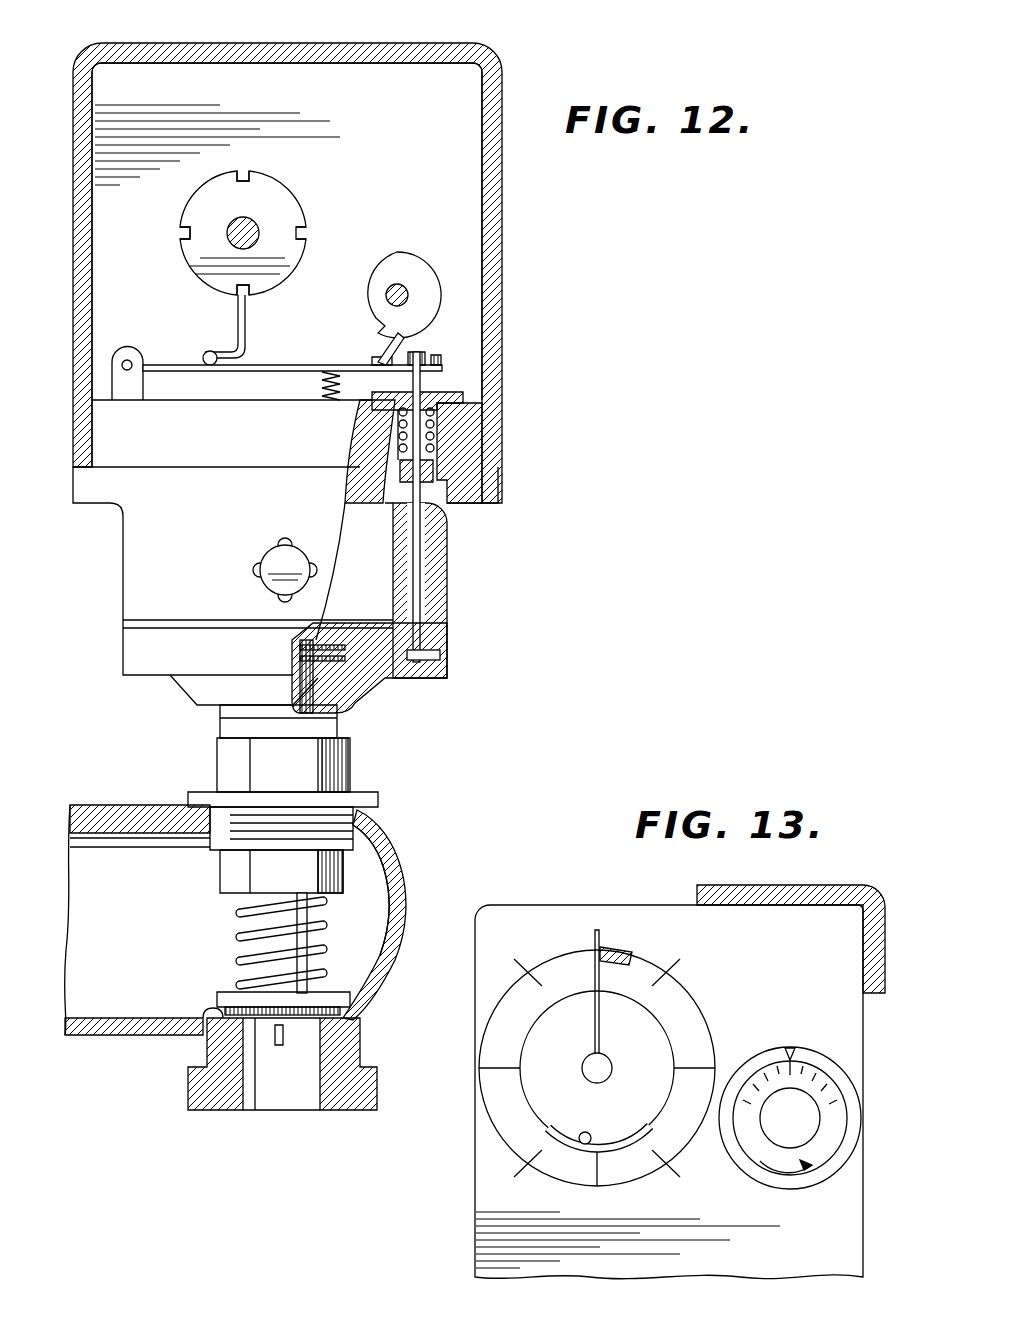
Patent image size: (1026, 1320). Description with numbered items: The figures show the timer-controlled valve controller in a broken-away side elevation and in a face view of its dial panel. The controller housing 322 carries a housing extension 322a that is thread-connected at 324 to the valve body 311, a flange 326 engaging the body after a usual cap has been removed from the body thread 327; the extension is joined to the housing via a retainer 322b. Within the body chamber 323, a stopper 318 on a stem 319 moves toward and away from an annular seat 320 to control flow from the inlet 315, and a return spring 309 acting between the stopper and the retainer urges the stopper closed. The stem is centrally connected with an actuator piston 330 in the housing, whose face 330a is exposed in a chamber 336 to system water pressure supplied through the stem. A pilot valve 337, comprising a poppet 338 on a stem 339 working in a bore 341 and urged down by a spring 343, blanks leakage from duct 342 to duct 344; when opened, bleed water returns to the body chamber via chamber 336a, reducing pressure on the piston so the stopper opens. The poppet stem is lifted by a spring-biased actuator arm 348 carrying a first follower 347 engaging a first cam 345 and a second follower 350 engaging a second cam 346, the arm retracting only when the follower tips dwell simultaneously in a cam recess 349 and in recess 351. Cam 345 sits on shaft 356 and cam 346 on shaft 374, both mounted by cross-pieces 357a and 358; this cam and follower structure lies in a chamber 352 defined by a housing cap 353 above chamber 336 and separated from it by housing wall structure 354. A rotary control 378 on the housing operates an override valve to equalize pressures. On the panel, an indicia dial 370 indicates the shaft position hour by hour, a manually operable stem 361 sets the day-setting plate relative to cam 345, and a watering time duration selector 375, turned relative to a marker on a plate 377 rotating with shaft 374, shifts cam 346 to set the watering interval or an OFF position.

In FIG. 12, the return spring 309 is at (340, 930).
In FIG. 12, the body 311 is at (400, 860).
In FIG. 12, the inlet 315 is at (310, 1105).
In FIG. 12, the stopper 318 is at (220, 1000).
In FIG. 12, the stem 319 is at (265, 955).
In FIG. 12, the annular seat 320 is at (345, 1000).
In FIG. 12, the housing 322 is at (140, 683).
In FIG. 12, the housing extension 322a is at (335, 765).
In FIG. 12, the retainer 322b is at (330, 888).
In FIG. 12, the body chamber 323 is at (137, 920).
In FIG. 12, the thread connection 324 is at (340, 820).
In FIG. 12, the flange 326 is at (200, 790).
In FIG. 12, the body thread 327 is at (225, 830).
In FIG. 12, the actuator diaphragm or piston 330 is at (355, 636).
In FIG. 12, the piston face 330a is at (425, 655).
In FIG. 12, the chamber 336 is at (382, 590).
In FIG. 12, the chamber 336a is at (360, 680).
In FIG. 12, the pilot or control valve 337 is at (395, 453).
In FIG. 12, the poppet 338 is at (480, 485).
In FIG. 12, the stem 339 is at (470, 392).
In FIG. 12, the bore 341 is at (450, 522).
In FIG. 12, the duct 342 is at (400, 475).
In FIG. 12, the spring 343 is at (437, 430).
In FIG. 12, the duct 344 is at (422, 597).
In FIG. 12, the first rotary cam 345 is at (207, 200).
In FIG. 12, the second rotary cam 346 is at (396, 262).
In FIG. 12, the first follower 347 is at (250, 318).
In FIG. 12, the actuator arm 348 is at (262, 380).
In FIG. 12, the cam recess 349 is at (243, 178).
In FIG. 12, the second follower 350 is at (375, 350).
In FIG. 12, the recess 351 is at (404, 336).
In FIG. 12, the chamber 352 is at (287, 265).
In FIG. 12, the housing cap 353 is at (330, 50).
In FIG. 13, the housing cap 353 is at (735, 893).
In FIG. 12, the housing wall structure 354 is at (470, 460).
In FIG. 12, the shaft 356 is at (262, 240).
In FIG. 13, the cross-piece 357a is at (500, 1232).
In FIG. 12, the cross piece 358 is at (118, 88).
In FIG. 13, the manually operable stem 361 is at (590, 1130).
In FIG. 13, the indicia indicator dial 370 is at (665, 975).
In FIG. 12, the shaft 374 is at (403, 290).
In FIG. 13, the watering time duration selector 375 is at (785, 1175).
In FIG. 13, the plate 377 is at (825, 1060).
In FIG. 12, the rotary control 378 is at (280, 560).